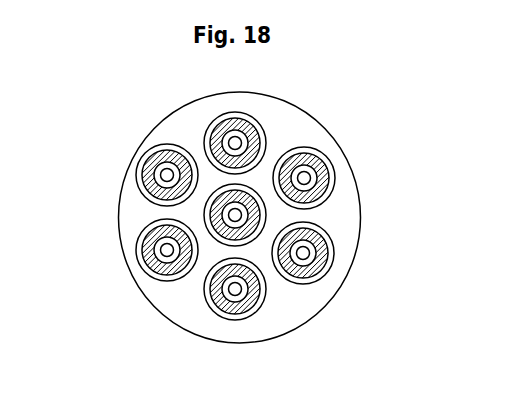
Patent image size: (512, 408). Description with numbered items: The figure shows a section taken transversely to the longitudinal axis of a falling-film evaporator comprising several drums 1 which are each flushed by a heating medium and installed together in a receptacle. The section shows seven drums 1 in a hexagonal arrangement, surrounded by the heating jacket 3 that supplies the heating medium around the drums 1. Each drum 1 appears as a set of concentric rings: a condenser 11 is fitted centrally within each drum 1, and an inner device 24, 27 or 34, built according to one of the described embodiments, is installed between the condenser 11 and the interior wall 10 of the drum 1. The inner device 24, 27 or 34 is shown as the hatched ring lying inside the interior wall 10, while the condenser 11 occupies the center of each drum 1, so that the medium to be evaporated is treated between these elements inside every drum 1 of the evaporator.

The drum 1 is at (154, 222).
The heating jacket 3 is at (183, 300).
The interior wall 10 is at (332, 192).
The condenser 11 is at (309, 172).
The inner device 24 is at (383, 178).
The inner device 27 is at (383, 178).
The inner device 34 is at (327, 180).